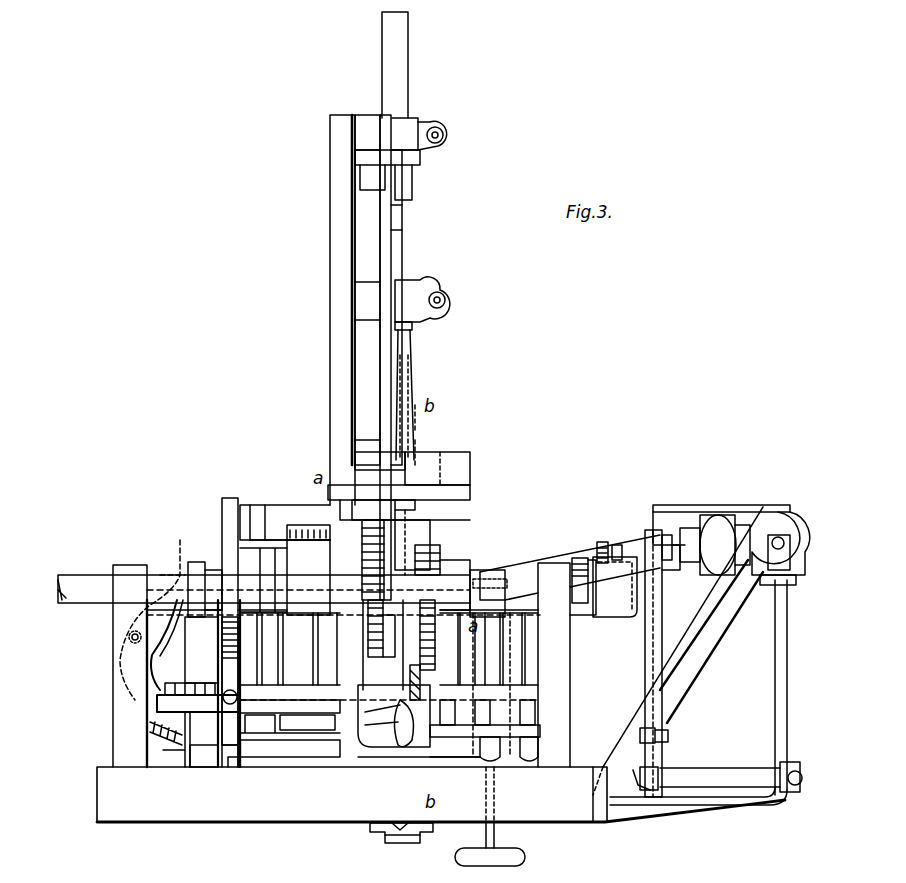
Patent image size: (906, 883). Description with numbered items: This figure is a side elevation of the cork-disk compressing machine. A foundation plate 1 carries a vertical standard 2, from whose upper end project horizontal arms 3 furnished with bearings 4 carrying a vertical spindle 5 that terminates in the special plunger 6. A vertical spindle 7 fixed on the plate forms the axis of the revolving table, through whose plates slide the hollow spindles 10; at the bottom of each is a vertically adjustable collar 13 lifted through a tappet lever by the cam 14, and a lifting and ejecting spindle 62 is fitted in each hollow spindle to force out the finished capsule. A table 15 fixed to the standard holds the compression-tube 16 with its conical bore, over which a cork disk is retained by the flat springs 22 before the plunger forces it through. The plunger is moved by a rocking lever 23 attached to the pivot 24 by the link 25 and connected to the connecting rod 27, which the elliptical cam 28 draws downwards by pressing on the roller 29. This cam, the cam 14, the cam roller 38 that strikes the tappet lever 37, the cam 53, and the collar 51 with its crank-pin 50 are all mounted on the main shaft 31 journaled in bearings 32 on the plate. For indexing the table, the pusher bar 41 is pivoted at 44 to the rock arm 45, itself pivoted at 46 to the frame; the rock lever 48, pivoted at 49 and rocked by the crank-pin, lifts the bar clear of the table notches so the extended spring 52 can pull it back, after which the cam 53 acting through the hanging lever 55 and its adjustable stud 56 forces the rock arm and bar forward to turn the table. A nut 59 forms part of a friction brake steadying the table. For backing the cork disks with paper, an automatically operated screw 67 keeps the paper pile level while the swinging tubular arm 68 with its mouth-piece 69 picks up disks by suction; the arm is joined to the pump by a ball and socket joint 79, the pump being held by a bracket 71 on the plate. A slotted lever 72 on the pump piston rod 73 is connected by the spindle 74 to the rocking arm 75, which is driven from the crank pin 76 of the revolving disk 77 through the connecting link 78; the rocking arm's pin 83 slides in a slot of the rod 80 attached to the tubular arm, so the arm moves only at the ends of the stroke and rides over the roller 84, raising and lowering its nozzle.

The foundation plate 1 is at (258, 821).
The vertical bracket or standard 2 is at (340, 357).
The horizontal arms 3 is at (357, 122).
The bearings 4 is at (420, 142).
The vertical spindle 5 is at (408, 90).
The special plunger 6 is at (412, 388).
The vertical spindle 7 is at (388, 842).
The hollow spindles 10 is at (772, 525).
The vertically adjustable collar 13 is at (370, 748).
The cam 14 is at (440, 564).
The table 15 is at (466, 494).
The compression-tube 16 is at (420, 547).
The flat springs 22 is at (430, 466).
The rocking bar or lever 23 is at (402, 250).
The pivot 24 is at (402, 135).
The link 25 is at (385, 142).
The connecting rod 27 is at (385, 252).
The elliptical cam 28 is at (368, 556).
The roller 29 is at (372, 628).
The main shaft 31 is at (90, 583).
The bearings 32 is at (125, 578).
The tappet lever 37 is at (304, 524).
The cam roller 38 is at (285, 577).
The pusher bar 41 is at (152, 703).
The pivot 44 is at (222, 648).
The rock arm 45 is at (185, 722).
The pivot 46 is at (292, 740).
The rock lever 48 is at (98, 672).
The pivot 49 is at (128, 636).
The crank-pin 50 is at (167, 645).
The collar 51 is at (228, 520).
The extended spring 52 is at (148, 726).
The cam 53 is at (208, 620).
The hanging lever 55 is at (233, 665).
The adjustable pin or stud 56 is at (214, 772).
The nut 59 is at (374, 826).
The lifting and ejecting spindles 62 is at (532, 762).
The automatically operated screw 67 is at (495, 832).
The swinging tubular arm 68 is at (545, 560).
The mouth-piece 69 is at (490, 570).
The bracket 71 is at (716, 640).
The slotted lever 72 is at (788, 665).
The pump piston rod 73 is at (792, 556).
The spindle 74 is at (706, 773).
The rocking arm 75 is at (645, 746).
The crank pin 76 is at (662, 560).
The revolving disk 77 is at (645, 652).
The connecting link 78 is at (668, 668).
The ball and socket joint 79 is at (717, 517).
The rod 80 is at (602, 540).
The pin 83 is at (626, 580).
The roller 84 is at (583, 556).